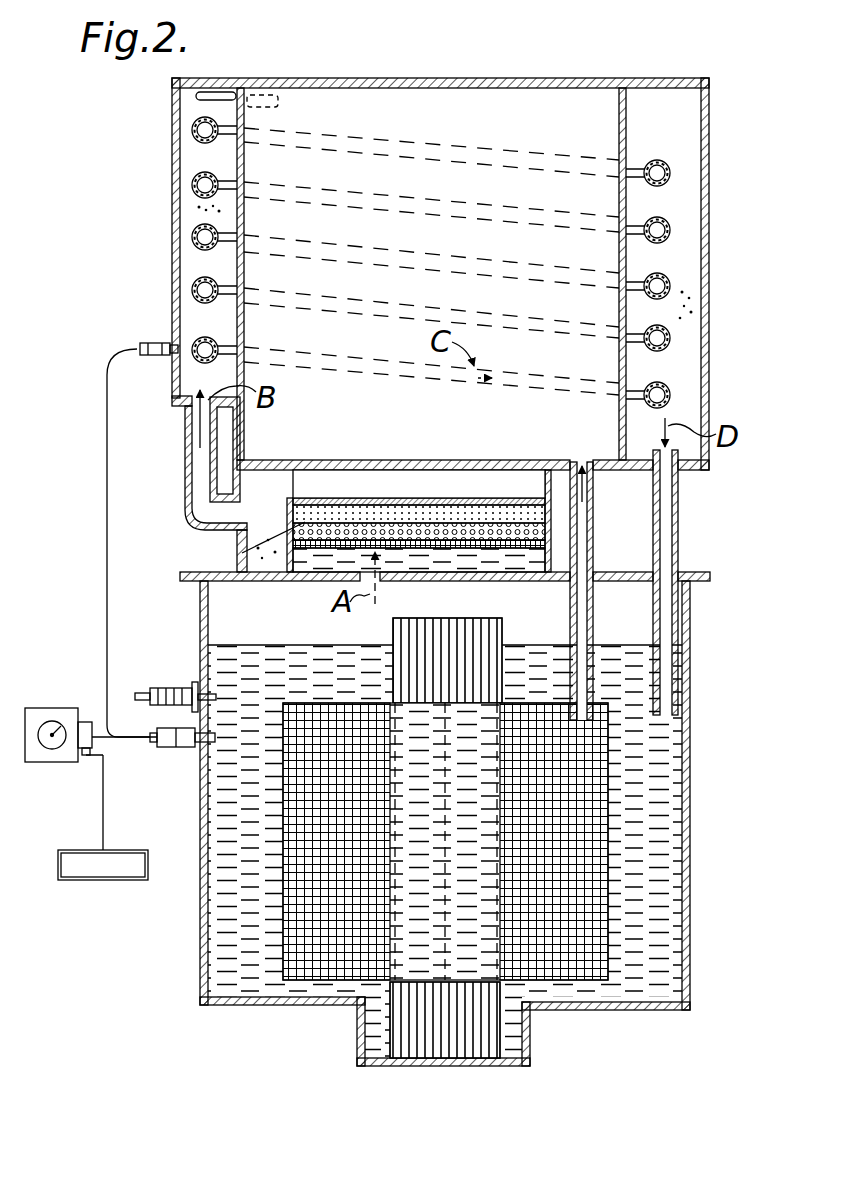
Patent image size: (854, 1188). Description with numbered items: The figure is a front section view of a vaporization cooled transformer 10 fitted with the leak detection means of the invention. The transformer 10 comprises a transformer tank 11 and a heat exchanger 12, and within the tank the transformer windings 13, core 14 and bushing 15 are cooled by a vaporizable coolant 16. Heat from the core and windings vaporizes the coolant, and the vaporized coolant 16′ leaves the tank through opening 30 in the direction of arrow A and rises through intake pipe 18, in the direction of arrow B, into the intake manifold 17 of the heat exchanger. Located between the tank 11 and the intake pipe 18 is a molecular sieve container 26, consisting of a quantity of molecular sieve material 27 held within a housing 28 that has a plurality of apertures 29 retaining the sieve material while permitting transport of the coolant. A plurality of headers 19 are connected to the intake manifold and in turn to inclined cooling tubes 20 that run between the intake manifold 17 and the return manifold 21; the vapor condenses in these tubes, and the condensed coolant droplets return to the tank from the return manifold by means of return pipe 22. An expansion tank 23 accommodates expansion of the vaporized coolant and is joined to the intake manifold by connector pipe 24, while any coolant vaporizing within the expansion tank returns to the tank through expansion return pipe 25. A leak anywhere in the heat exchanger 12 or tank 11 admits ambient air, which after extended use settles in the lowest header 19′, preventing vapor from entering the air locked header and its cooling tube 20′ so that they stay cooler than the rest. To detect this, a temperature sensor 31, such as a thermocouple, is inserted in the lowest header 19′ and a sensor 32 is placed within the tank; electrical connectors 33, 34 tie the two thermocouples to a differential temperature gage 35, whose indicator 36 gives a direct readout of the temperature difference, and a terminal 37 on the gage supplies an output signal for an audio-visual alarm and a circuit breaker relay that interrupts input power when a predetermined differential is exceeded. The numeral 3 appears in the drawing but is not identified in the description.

The vaporization cooled transformer 10 is at (729, 643).
The transformer tank 11 is at (729, 913).
The heat exchanger 12 is at (746, 281).
The transformer windings 13 is at (372, 956).
The core 14 is at (470, 1042).
The bushing 15 is at (168, 688).
The vaporizable coolant 16 is at (208, 893).
The vaporized coolant 16′ is at (198, 210).
The intake manifold 17 is at (185, 258).
The intake pipe 18 is at (186, 485).
The headers 19 is at (670, 162).
The lowest header 19′ is at (197, 338).
The inclined cooling tubes 20 is at (330, 134).
The spray jet 20′ is at (264, 350).
The return manifold 21 is at (690, 216).
The return pipe 22 is at (680, 519).
The expansion tank 23 is at (434, 458).
The connector pipe 24 is at (196, 96).
The expansion return pipe 25 is at (585, 458).
The molecular sieve container 26 is at (419, 538).
The molecular sieve material 27 is at (505, 498).
The housing 28 is at (301, 497).
The apertures 29 is at (245, 540).
The opening 30 is at (384, 578).
The nozzle 3 is at (662, 398).
The temperature sensor 31 is at (154, 358).
The sensor 32 is at (174, 750).
The electrical connector 33 is at (106, 580).
The electrical connector 34 is at (135, 745).
The differential temperature gage 35 is at (55, 764).
The indicator 36 is at (52, 720).
The terminal 37 is at (90, 757).